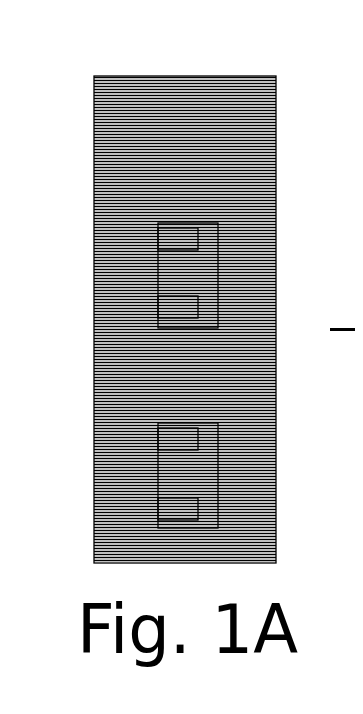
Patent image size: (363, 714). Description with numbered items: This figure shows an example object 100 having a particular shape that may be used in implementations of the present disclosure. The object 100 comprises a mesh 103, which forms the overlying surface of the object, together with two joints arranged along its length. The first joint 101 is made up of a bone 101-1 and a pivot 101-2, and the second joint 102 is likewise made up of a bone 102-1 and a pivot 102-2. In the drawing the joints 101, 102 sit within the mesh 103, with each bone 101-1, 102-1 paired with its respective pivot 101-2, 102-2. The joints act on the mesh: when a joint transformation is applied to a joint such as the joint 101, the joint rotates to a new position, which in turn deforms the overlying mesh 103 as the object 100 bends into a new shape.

The object 100 is at (120, 85).
The mesh 103 is at (243, 118).
The joint 101 is at (200, 293).
The bone 101-1 is at (152, 235).
The pivot 101-2 is at (152, 303).
The joint 102 is at (200, 495).
The bone 102-1 is at (155, 430).
The pivot 102-2 is at (155, 500).